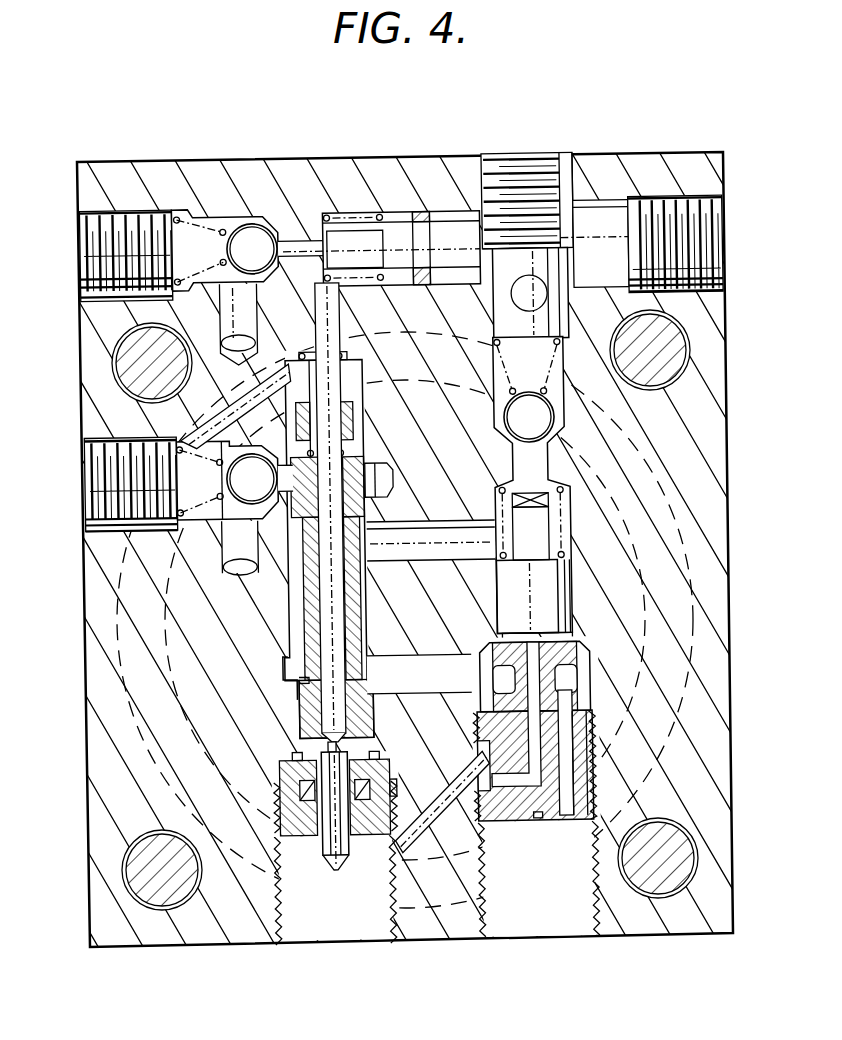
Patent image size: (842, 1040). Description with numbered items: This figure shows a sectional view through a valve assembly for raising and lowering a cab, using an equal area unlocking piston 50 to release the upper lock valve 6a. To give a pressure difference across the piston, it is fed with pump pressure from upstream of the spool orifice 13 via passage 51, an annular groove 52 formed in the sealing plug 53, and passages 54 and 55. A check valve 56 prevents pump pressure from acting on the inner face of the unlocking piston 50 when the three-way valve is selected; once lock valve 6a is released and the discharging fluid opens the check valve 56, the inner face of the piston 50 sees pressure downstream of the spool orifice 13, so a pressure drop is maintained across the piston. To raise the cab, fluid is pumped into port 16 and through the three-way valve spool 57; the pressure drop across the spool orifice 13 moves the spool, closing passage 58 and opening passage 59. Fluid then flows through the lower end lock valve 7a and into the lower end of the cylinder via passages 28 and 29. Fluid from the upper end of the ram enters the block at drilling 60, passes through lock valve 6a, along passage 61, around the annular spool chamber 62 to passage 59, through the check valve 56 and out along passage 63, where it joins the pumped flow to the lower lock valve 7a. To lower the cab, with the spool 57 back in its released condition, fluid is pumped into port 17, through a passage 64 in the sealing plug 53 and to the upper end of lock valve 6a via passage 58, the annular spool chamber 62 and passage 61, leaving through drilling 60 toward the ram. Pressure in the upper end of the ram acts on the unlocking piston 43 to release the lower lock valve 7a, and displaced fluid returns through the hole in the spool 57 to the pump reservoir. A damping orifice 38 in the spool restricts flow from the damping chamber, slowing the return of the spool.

The lower end lock valve 7a is at (250, 232).
The passage 28 is at (222, 346).
The unlocking piston 43 is at (398, 226).
The drilling 60 is at (533, 290).
The upper lock valve 6a is at (580, 419).
The equal area unlocking piston 50 is at (540, 588).
The passage 61 is at (432, 542).
The annular spool chamber 62 is at (291, 592).
The passage 59 is at (375, 482).
The three-way valve spool 57 is at (298, 683).
The passage 58 is at (397, 657).
The spool orifice 13 is at (322, 745).
The port 16 is at (357, 918).
The damping orifice 38 is at (320, 757).
The port 17 is at (522, 913).
The passage 64 is at (575, 732).
The passage 55 is at (560, 665).
The passage 54 is at (513, 780).
The sealing plug 53 is at (562, 800).
The annular groove 52 is at (600, 782).
The passage 51 is at (430, 840).
The check valve 56 is at (172, 478).
The passage 29 is at (222, 567).
The passage 63 is at (182, 440).